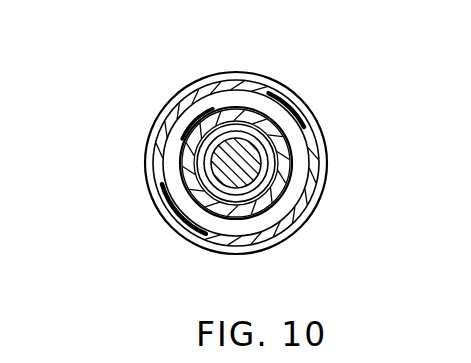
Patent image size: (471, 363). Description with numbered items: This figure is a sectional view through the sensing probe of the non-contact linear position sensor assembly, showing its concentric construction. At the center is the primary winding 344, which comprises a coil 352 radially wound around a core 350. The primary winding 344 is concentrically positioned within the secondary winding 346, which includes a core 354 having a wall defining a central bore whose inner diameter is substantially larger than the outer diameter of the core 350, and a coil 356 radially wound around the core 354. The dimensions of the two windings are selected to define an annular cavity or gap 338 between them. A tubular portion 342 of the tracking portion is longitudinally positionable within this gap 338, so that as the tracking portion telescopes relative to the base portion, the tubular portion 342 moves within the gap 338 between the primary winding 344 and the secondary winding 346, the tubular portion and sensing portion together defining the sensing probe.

The secondary winding 346 is at (150, 126).
The coil 356 is at (146, 158).
The core 354 is at (170, 192).
The annular cavity or gap 338 is at (168, 191).
The tubular portion 342 is at (280, 205).
The primary winding 344 is at (253, 123).
The coil 352 is at (267, 175).
The core 350 is at (258, 148).